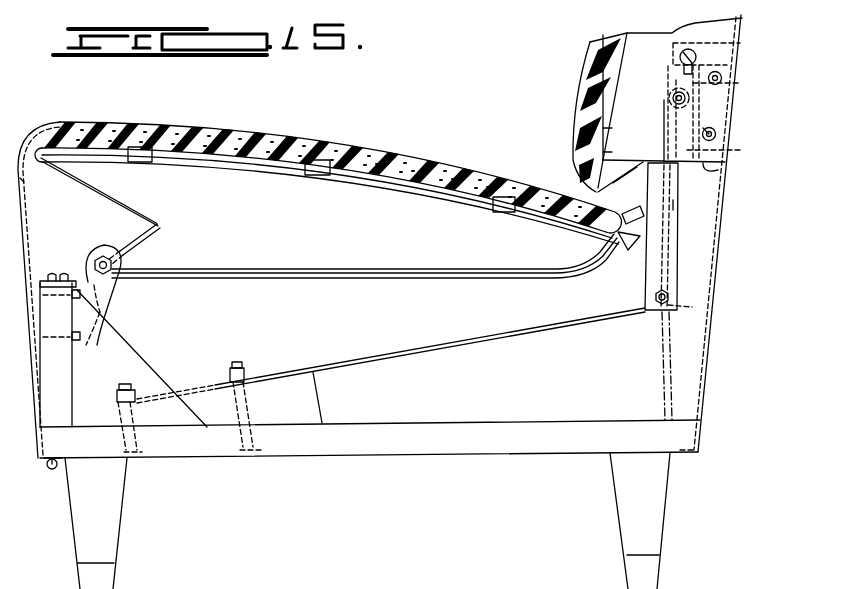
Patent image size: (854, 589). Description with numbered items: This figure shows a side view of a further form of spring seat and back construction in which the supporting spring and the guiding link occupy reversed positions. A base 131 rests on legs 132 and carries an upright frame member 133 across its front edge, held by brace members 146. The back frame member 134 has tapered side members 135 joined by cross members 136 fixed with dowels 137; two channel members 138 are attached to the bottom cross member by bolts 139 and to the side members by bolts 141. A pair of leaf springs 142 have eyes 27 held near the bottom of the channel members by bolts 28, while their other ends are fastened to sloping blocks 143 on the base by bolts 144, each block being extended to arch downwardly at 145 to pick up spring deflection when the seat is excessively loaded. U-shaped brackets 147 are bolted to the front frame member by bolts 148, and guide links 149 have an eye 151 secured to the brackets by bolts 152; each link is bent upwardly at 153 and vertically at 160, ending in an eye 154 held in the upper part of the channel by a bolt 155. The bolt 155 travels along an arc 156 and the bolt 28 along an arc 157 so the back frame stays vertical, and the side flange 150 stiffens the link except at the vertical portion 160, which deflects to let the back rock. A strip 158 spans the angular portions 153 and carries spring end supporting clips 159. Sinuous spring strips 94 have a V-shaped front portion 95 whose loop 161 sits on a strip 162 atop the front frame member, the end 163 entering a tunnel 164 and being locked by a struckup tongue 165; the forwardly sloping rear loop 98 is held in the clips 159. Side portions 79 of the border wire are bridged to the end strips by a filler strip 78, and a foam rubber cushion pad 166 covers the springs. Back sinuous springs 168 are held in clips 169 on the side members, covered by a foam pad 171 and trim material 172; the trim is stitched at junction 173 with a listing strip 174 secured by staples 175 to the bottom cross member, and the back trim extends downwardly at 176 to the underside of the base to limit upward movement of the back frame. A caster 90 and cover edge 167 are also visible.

The eyes 27 is at (692, 307).
The bolts 28 is at (660, 310).
The arch or filler strip 78 is at (46, 143).
The side portions 79 is at (226, 172).
The caster wheel 90 is at (52, 469).
The sinuous spring strips 94 is at (288, 176).
The V-shaped front supporting portion 95 is at (135, 207).
The forwardly sloping rear loop 98 is at (583, 235).
The base 131 is at (295, 458).
The legs 132 is at (112, 513).
The upright frame member 133 is at (58, 385).
The back frame member 134 is at (728, 78).
The tapered side members 135 is at (736, 35).
The cross members 136 is at (738, 85).
The dowels 137 is at (735, 130).
The channel members 138 is at (670, 270).
The bolts 139 is at (735, 150).
The bolts 141 is at (680, 52).
The leaf springs 142 is at (333, 364).
The sloping blocks 143 is at (320, 400).
The bolts 144 is at (243, 372).
The downwardly arched portion 145 is at (313, 377).
The brace members 146 is at (155, 378).
The U-shaped brackets 147 is at (101, 313).
The bolts 148 is at (72, 348).
The guide links 149 is at (302, 270).
The side flange 150 is at (445, 280).
The eye 151 is at (137, 249).
The bolts 152 is at (122, 263).
The upwardly bent portion 153 is at (625, 237).
The eye 154 is at (678, 86).
The bolts 155 is at (690, 100).
The arc 156 is at (685, 238).
The arc 157 is at (675, 366).
The strip 158 is at (675, 208).
The spring end supporting clips 159 is at (700, 253).
The vertically extending end portion 160 is at (671, 104).
The loop 161 is at (108, 280).
The strip 162 is at (50, 275).
The end 163 is at (68, 278).
The tunnel 164 is at (60, 277).
The struckup tongue 165 is at (95, 262).
The foam rubber cushion pad 166 is at (240, 135).
The cover edge 167 is at (24, 183).
The sinuous springs 168 is at (607, 158).
The clips 169 is at (607, 133).
The foam rubber pad 171 is at (580, 80).
The trim material 172 is at (578, 57).
The junction 173 is at (596, 194).
The listing strip 174 is at (715, 123).
The staples 175 is at (718, 168).
The downward extension of back trim material 176 is at (715, 296).